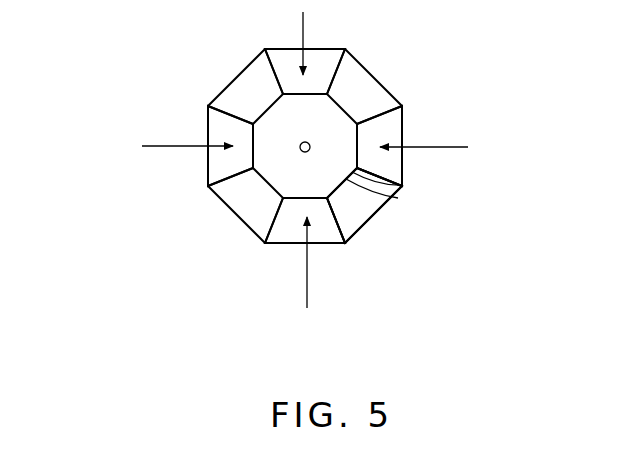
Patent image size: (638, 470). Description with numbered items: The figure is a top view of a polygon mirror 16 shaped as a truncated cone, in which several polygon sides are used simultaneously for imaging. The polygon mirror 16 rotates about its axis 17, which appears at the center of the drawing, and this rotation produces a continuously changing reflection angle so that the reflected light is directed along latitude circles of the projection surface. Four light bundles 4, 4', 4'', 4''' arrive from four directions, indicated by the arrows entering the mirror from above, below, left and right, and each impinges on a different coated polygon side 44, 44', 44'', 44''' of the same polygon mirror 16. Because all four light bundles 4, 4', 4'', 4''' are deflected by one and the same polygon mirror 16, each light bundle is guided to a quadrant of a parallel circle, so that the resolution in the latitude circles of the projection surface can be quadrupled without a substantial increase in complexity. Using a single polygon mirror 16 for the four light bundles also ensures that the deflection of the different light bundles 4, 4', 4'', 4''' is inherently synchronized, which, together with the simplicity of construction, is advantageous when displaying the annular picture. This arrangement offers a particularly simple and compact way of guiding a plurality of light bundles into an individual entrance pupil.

The light bundle 4 is at (351, 37).
The light bundle 4' is at (450, 119).
The light bundle 4'' is at (255, 262).
The light bundle 4''' is at (159, 117).
The coated polygon side 44 is at (348, 64).
The coated polygon side 44' is at (420, 128).
The coated polygon side 44'' is at (257, 228).
The coated polygon side 44''' is at (190, 125).
The polygon mirror 16 is at (330, 173).
The axis 17 is at (385, 192).